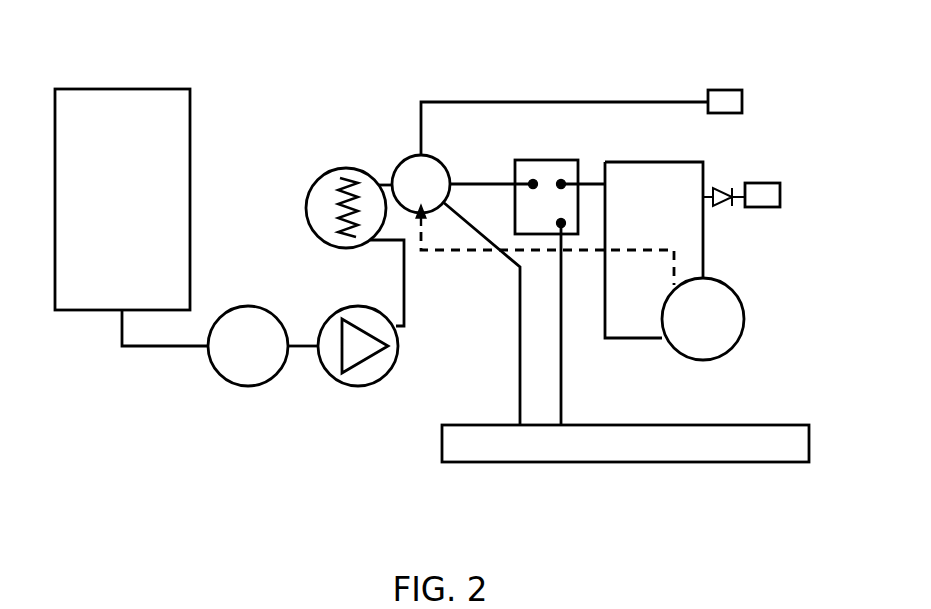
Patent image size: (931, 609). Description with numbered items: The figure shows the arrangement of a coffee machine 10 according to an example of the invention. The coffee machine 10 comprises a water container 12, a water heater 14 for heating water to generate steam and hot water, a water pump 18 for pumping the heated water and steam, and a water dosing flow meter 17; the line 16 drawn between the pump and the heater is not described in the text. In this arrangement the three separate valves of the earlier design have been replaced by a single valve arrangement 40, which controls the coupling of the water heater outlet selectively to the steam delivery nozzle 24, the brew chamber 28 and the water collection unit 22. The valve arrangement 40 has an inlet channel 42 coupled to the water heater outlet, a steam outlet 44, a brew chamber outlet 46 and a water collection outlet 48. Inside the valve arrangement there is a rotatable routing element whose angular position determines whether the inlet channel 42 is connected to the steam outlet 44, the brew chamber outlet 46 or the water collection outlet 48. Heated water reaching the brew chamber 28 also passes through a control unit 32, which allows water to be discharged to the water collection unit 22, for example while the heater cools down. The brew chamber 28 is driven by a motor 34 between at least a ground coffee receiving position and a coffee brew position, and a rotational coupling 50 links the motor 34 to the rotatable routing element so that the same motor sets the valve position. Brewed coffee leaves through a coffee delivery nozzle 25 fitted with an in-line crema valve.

The coffee machine 10 is at (303, 62).
The water container 12 is at (190, 162).
The water heater 14 is at (343, 168).
The fluid conduit 16 is at (400, 281).
The water dosing flow meter 17 is at (265, 386).
The water pump 18 is at (367, 386).
The water collection unit 22 is at (777, 425).
The steam delivery nozzle 24 is at (729, 90).
The coffee delivery nozzle 25 is at (765, 183).
The brew chamber 28 is at (704, 245).
The control unit 32 is at (560, 160).
The motor 34 is at (731, 351).
The valve arrangement 40 is at (407, 155).
The inlet channel 42 is at (388, 183).
The steam outlet 44 is at (422, 137).
The brew chamber outlet 46 is at (453, 183).
The water collection outlet 48 is at (458, 214).
The rotational coupling 50 is at (440, 253).